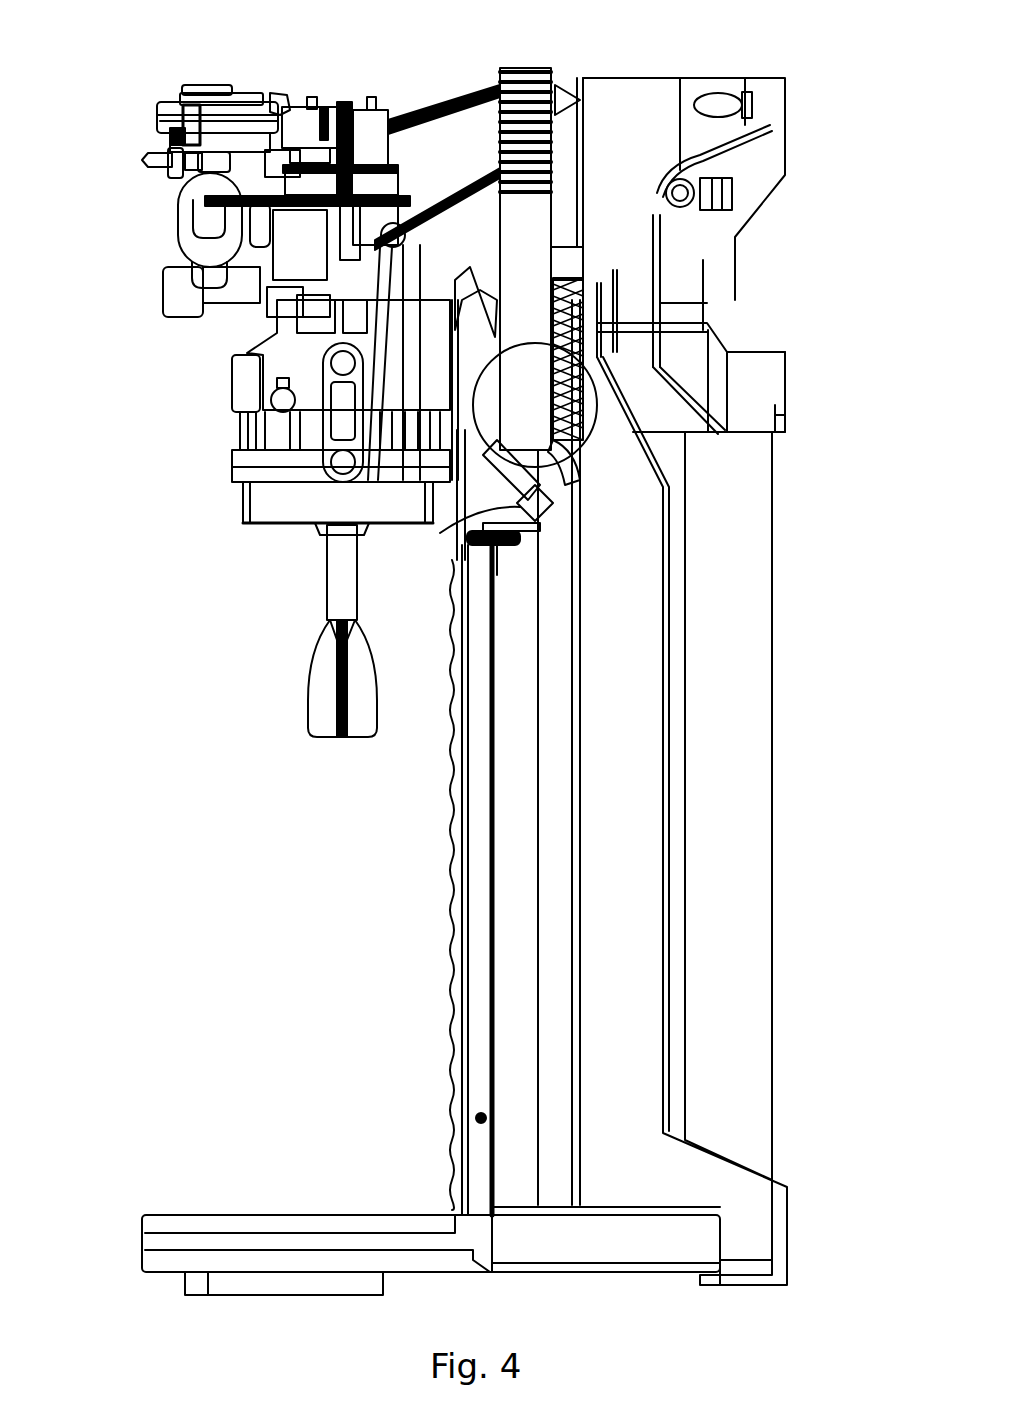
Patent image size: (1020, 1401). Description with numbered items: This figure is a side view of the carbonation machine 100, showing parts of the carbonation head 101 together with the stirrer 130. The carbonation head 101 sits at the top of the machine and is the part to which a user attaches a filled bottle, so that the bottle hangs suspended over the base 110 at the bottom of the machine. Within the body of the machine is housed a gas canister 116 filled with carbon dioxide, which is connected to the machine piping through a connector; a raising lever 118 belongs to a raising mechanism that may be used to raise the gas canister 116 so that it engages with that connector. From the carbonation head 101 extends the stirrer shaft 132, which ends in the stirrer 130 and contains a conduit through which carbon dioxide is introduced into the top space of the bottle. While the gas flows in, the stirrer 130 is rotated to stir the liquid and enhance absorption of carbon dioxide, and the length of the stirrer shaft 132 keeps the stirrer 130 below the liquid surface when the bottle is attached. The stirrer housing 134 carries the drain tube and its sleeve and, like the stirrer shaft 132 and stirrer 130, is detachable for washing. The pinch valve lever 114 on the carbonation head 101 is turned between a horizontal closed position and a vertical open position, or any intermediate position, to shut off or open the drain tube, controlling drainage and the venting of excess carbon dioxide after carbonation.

The carbonation machine 100 is at (318, 853).
The carbonation head 101 is at (212, 337).
The base 110 is at (332, 1255).
The pinch valve lever 114 is at (498, 88).
The gas canister 116 is at (772, 864).
The raising lever 118 is at (790, 390).
The stirrer 130 is at (310, 675).
The stirrer shaft 132 is at (327, 590).
The stirrer housing 134 is at (472, 517).